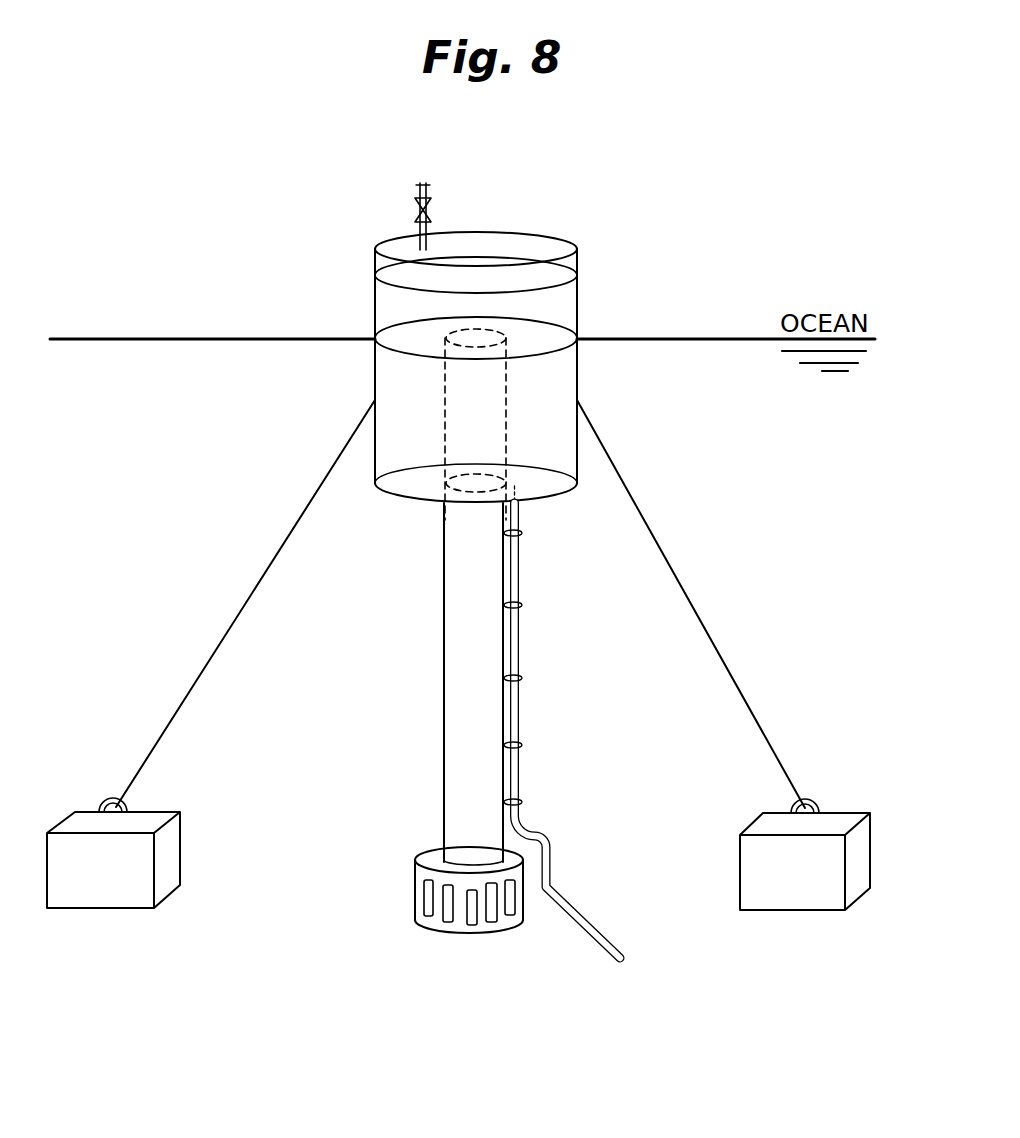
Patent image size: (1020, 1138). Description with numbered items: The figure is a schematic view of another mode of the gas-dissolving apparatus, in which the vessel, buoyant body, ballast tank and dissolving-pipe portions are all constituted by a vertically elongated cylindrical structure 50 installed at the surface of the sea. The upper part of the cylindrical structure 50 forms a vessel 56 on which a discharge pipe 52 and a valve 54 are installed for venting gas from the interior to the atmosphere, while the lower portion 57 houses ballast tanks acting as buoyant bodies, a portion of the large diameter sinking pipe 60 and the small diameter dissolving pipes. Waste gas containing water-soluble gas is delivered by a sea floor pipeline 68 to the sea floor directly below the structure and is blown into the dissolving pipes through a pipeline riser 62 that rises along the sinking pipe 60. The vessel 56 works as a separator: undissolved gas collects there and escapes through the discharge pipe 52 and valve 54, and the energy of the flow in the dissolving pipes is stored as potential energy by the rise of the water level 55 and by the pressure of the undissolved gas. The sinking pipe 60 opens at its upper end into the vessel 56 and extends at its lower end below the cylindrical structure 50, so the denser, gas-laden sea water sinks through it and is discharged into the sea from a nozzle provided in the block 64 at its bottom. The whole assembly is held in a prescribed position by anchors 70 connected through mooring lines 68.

The cylindrical structure 50 is at (515, 227).
The discharge pipe 52 is at (425, 237).
The valve 54 is at (418, 213).
The water level 55 is at (550, 292).
The vessel 56 is at (378, 307).
The lower portion 57 is at (537, 387).
The sinking pipe 60 is at (462, 722).
The pipeline riser 62 is at (513, 667).
The block 64 is at (516, 900).
The mooring lines 68 is at (600, 935).
The anchors 70 is at (805, 841).